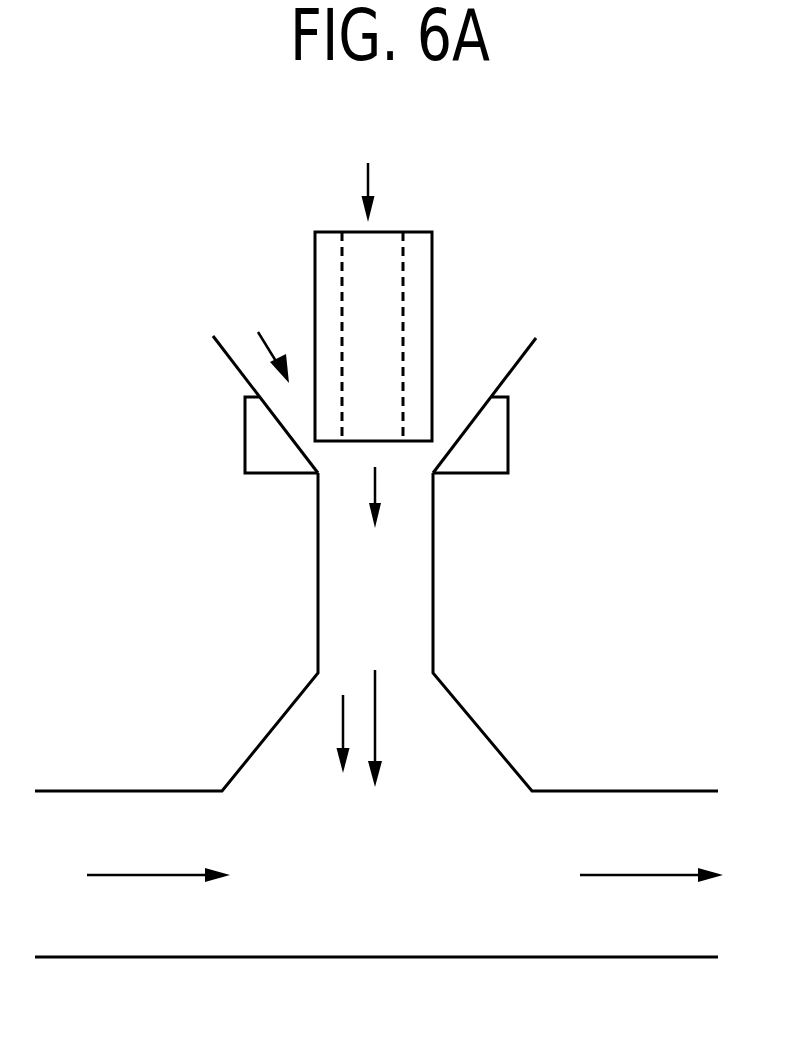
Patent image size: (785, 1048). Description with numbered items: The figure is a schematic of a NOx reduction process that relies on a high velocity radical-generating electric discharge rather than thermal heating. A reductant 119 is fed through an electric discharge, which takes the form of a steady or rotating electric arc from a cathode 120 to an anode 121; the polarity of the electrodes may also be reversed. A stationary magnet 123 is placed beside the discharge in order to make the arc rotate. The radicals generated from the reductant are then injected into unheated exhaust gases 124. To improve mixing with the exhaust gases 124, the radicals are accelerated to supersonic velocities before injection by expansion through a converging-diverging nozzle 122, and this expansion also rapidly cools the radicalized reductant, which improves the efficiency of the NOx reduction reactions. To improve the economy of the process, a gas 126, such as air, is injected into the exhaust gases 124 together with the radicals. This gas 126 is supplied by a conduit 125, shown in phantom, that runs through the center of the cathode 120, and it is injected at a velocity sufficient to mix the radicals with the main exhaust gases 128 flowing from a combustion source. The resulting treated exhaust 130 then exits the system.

The reductant 119 is at (262, 336).
The cathode 120 is at (417, 271).
The anode 121 is at (508, 373).
The converging-diverging nozzle 122 is at (437, 596).
The stationary magnet 123 is at (258, 441).
The exhaust gases 124 is at (378, 708).
The conduit 125 is at (380, 319).
The gas 126 is at (238, 720).
The main exhaust gases 128 is at (131, 877).
The treated exhaust 130 is at (622, 877).